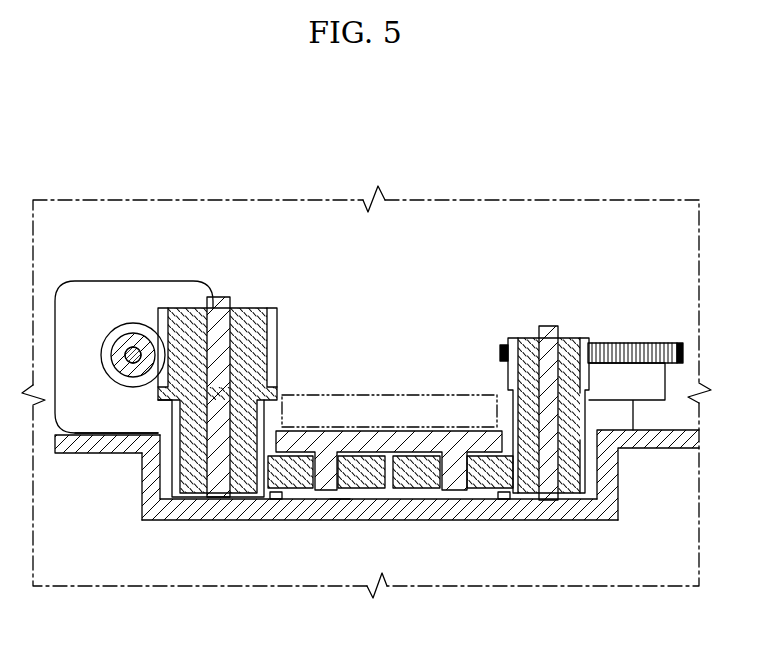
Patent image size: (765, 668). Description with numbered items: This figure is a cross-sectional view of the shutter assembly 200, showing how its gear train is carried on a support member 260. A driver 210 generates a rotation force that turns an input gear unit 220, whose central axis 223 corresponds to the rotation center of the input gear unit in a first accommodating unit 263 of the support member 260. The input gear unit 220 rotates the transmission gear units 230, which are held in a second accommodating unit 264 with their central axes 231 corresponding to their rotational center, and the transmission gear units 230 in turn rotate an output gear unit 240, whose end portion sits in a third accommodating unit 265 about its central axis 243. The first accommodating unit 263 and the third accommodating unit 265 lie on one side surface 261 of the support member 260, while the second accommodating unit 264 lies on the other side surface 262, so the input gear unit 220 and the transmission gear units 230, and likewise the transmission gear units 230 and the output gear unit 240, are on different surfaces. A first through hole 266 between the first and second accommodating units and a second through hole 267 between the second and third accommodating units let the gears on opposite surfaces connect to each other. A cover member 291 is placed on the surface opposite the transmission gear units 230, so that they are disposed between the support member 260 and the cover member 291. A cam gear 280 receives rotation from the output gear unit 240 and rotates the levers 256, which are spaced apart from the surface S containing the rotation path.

The shutter assembly 200 is at (556, 201).
The driver 210 is at (111, 281).
The input gear unit 220 is at (254, 306).
The central axis of the input gear unit 223 is at (220, 297).
The transmission gear units 230 is at (417, 481).
The central axes of the transmission gear units 231 is at (327, 487).
The output gear unit 240 is at (582, 339).
The central axis of the output gear unit 243 is at (547, 326).
The levers 256 is at (436, 395).
The support member 260 is at (73, 445).
The one side surface 261 is at (97, 435).
The other side surface 262 is at (122, 453).
The first accommodating unit 263 is at (181, 499).
The second accommodating unit 264 is at (362, 442).
The third accommodating unit 265 is at (573, 500).
The first through hole 266 is at (278, 497).
The second through hole 267 is at (504, 499).
The cam gear 280 is at (647, 343).
The cover member 291 is at (340, 507).